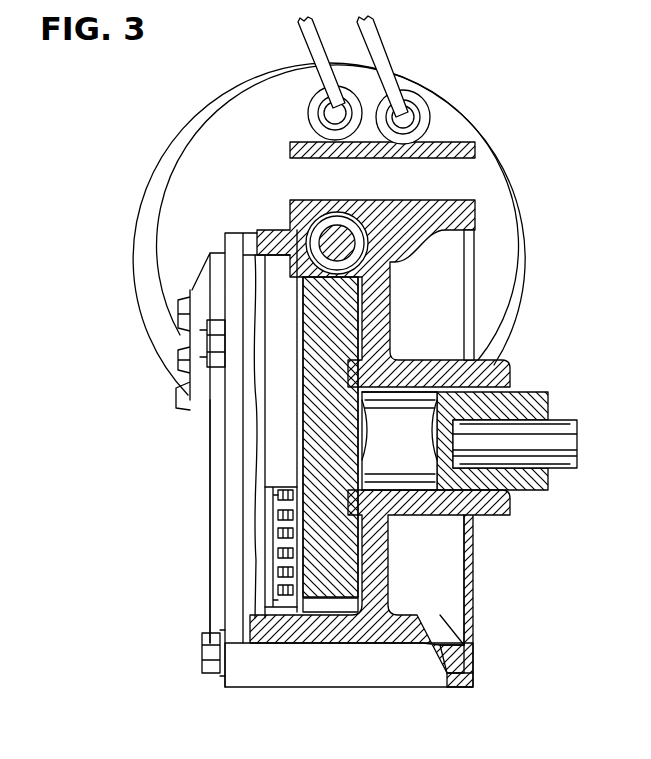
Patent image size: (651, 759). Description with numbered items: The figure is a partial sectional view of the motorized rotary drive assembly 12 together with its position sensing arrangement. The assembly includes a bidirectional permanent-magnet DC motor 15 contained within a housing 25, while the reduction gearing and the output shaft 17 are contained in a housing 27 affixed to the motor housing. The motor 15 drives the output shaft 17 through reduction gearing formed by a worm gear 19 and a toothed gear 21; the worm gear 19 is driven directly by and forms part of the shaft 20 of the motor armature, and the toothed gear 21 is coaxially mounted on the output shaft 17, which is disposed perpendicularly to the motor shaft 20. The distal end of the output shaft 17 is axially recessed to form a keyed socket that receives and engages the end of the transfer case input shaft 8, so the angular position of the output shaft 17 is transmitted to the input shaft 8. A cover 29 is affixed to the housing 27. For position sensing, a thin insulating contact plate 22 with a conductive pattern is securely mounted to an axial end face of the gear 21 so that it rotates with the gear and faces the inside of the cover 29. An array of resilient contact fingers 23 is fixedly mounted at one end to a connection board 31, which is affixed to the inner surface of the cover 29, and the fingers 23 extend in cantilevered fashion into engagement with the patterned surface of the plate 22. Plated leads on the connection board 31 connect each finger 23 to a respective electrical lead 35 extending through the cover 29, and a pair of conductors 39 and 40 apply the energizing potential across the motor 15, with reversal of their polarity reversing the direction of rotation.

The motorized rotary drive assembly 12 is at (470, 58).
The DC motor 15 is at (488, 130).
The housing 25 is at (180, 139).
The conductor 39 is at (302, 42).
The conductor 40 is at (366, 40).
The worm gear 19 is at (318, 225).
The motor shaft 20 is at (350, 244).
The toothed gear 21 is at (285, 212).
The electrical leads 35 is at (180, 337).
The output shaft 17 is at (522, 403).
The transfer case input shaft 8 is at (560, 428).
The contact plate 22 is at (298, 465).
The contact fingers 23 is at (278, 533).
The cover 29 is at (212, 561).
The connection board 31 is at (258, 582).
The housing 27 is at (457, 656).